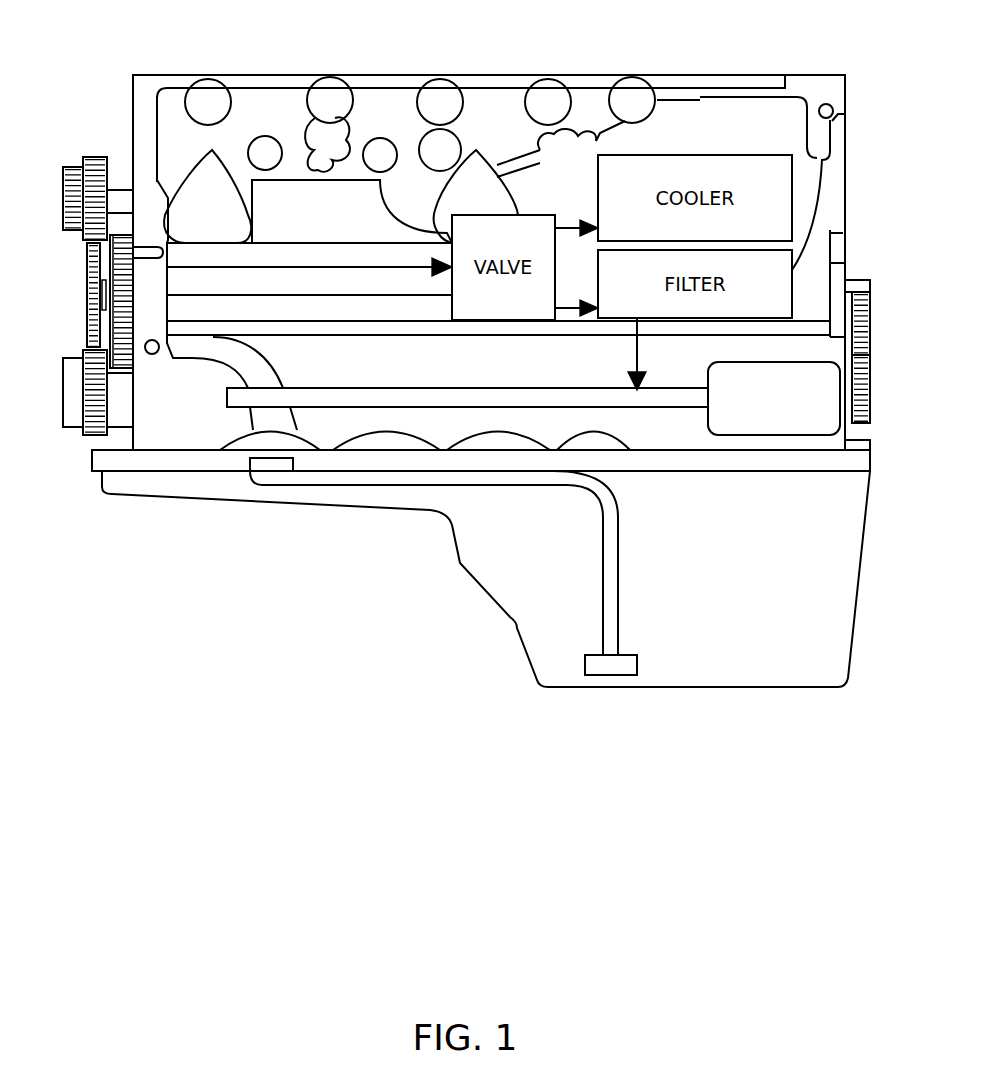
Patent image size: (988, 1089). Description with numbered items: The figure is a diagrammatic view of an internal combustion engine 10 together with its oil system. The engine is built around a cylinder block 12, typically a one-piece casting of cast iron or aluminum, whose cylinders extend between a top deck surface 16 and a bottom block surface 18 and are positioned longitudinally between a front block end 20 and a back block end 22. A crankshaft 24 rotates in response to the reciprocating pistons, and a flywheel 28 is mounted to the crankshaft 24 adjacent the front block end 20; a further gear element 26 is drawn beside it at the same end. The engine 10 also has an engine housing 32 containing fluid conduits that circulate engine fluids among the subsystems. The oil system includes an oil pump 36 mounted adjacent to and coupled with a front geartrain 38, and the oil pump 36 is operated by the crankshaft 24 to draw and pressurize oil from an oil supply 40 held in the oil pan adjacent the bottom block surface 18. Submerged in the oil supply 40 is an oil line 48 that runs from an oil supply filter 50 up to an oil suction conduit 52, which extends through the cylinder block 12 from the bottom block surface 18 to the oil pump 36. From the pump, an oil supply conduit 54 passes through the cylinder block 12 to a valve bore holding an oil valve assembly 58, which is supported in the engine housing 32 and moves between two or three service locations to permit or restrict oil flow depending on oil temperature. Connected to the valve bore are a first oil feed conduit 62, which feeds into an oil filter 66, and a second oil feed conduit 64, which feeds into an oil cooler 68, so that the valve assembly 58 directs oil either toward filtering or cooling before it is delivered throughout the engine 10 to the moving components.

The internal combustion engine 10 is at (872, 78).
The cylinder block 12 is at (497, 104).
The top deck surface 16 is at (290, 75).
The bottom block surface 18 is at (765, 472).
The front block end 20 is at (866, 197).
The back block end 22 is at (106, 106).
The crankshaft 24 is at (848, 356).
The bracket 26 is at (872, 283).
The flywheel 28 is at (872, 318).
The engine housing 32 is at (368, 337).
The oil pump 36 is at (104, 334).
The front geartrain 38 is at (45, 220).
The oil supply 40 is at (559, 688).
The oil line 48 is at (583, 491).
The oil supply filter 50 is at (638, 662).
The oil suction conduit 52 is at (204, 360).
The oil supply conduit 54 is at (297, 264).
The oil valve assembly 58 is at (451, 305).
The first oil feed conduit 62 is at (566, 306).
The second oil feed conduit 64 is at (566, 226).
The oil filter 66 is at (695, 320).
The oil cooler 68 is at (698, 156).